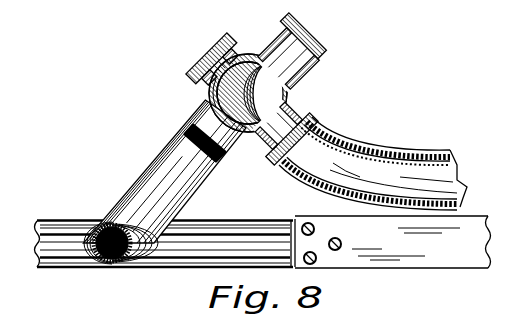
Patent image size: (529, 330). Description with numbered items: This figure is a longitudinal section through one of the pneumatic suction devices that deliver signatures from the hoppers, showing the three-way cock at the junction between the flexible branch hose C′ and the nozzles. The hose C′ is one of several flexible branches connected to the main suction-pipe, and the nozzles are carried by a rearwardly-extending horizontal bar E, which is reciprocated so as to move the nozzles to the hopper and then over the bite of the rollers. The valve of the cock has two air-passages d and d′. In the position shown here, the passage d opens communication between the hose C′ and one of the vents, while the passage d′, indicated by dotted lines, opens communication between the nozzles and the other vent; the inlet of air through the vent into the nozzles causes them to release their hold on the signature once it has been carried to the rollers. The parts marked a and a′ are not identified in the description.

The socket casing a is at (253, 55).
The socket ring a′ is at (212, 101).
The air-passage d is at (250, 93).
The air-passage d′ is at (292, 34).
The flexible branch C′ is at (466, 151).
The horizontal bar E is at (352, 243).